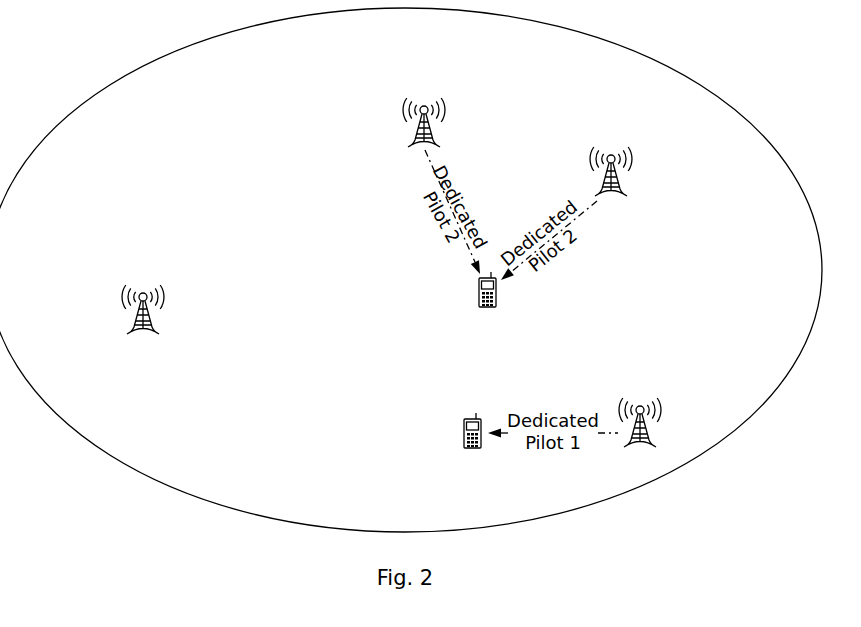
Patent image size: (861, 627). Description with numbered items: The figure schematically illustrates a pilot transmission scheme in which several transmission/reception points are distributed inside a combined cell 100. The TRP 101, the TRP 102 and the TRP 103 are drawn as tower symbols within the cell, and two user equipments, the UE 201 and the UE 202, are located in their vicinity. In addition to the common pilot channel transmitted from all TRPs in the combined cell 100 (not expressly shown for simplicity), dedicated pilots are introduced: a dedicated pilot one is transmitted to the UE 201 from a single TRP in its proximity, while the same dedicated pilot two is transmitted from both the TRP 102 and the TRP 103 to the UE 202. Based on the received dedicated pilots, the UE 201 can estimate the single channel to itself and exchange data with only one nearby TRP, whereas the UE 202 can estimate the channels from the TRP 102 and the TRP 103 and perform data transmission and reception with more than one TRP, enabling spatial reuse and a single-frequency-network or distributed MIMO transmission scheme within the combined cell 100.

The combined cell 100 is at (411, 270).
The TRP 101 is at (136, 289).
The TRP 102 is at (418, 102).
The TRP 103 is at (631, 280).
The UE 201 is at (469, 447).
The UE 202 is at (457, 300).